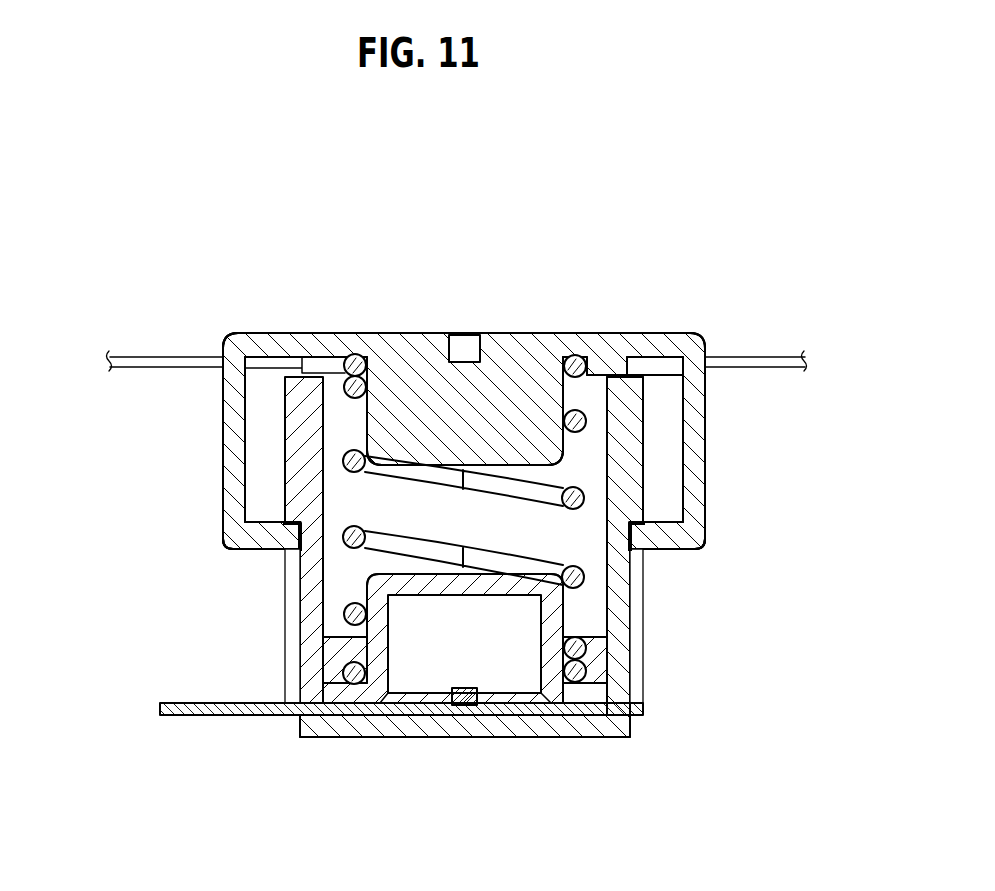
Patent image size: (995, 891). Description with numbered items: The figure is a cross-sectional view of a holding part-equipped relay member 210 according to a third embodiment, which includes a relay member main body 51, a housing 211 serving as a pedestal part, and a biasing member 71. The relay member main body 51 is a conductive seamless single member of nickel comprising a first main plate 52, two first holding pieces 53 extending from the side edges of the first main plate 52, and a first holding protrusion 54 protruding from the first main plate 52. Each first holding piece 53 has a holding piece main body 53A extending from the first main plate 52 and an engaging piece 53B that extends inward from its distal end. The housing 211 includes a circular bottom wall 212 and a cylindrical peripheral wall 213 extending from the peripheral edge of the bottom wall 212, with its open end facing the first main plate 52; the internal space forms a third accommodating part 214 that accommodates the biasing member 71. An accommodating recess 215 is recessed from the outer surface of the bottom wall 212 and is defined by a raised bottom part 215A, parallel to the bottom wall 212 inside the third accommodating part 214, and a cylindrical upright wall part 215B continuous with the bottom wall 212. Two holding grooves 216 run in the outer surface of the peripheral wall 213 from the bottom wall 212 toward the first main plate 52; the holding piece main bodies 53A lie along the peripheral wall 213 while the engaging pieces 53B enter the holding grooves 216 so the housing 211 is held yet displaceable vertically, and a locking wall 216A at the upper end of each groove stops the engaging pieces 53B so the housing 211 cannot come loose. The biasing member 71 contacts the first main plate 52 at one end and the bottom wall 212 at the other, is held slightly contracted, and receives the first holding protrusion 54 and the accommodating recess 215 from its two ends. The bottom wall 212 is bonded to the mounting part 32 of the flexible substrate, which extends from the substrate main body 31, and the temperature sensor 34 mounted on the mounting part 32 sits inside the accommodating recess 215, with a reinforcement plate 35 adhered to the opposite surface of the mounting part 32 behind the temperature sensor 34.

The holding part-equipped relay member 210 is at (511, 197).
The relay member main body 51 is at (650, 299).
The first main plate 52 is at (285, 333).
The first holding piece 53 is at (127, 467).
The holding piece main body 53A is at (237, 478).
The engaging piece 53B is at (257, 546).
The first holding protrusion 54 is at (532, 426).
The biasing member 71 is at (577, 356).
The substrate main body 31 is at (150, 355).
The mounting part 32 is at (185, 712).
The temperature sensor 34 is at (465, 680).
The reinforcement plate 35 is at (445, 728).
The housing 211 is at (658, 498).
The bottom wall 212 is at (593, 695).
The peripheral wall 213 is at (628, 468).
The third accommodating part 214 is at (323, 430).
The accommodating recess 215 is at (388, 638).
The raised bottom part 215A is at (510, 590).
The upright wall part 215B is at (373, 640).
The holding groove 216 is at (630, 664).
The locking wall 216A is at (638, 528).